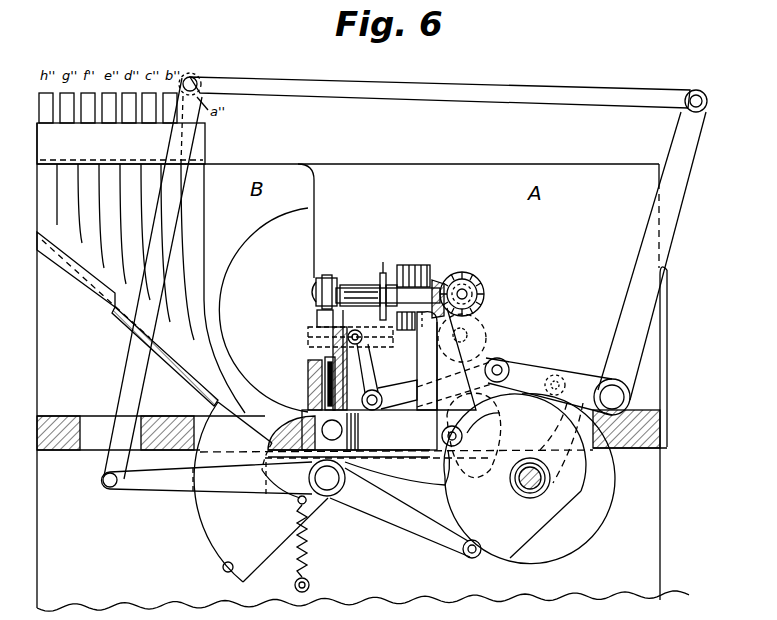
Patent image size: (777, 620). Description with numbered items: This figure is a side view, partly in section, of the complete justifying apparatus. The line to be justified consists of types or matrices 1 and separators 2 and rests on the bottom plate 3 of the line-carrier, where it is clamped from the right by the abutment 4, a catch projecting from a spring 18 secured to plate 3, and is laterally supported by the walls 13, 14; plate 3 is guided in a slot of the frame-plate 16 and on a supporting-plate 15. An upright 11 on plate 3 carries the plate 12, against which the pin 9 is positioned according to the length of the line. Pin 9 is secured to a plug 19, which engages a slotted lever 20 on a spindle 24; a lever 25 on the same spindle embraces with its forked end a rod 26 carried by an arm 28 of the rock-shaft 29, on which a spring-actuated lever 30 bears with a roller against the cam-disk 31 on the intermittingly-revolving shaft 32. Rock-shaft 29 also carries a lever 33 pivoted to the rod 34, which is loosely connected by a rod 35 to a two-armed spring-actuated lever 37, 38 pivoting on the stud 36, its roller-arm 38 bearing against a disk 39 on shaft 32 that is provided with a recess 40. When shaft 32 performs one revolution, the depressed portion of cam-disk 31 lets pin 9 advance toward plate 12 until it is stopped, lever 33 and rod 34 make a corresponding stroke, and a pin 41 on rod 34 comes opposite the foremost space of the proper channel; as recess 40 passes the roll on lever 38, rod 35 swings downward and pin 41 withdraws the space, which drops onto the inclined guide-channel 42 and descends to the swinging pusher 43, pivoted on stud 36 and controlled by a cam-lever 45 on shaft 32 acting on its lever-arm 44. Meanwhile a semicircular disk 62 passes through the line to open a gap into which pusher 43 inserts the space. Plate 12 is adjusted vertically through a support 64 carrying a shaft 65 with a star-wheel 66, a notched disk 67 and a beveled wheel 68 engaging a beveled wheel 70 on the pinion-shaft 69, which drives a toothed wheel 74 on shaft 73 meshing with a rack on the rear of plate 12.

The types or matrices 1 is at (350, 337).
The separators 2 is at (325, 318).
The bottom plate 3 is at (352, 383).
The right-hand abutment 4 is at (326, 377).
The pin 9 is at (393, 338).
The upright 11 is at (428, 361).
The plate 12 is at (418, 265).
The wall 13 is at (308, 378).
The channel-wall 14 is at (344, 354).
The supporting-plate 15 is at (382, 458).
The frame-plate 16 is at (650, 413).
The spring 18 is at (343, 432).
The plug 19 is at (357, 334).
The slotted lever 20 is at (366, 368).
The spindle 24 is at (376, 390).
The lever 25 is at (385, 398).
The rod 26 is at (500, 366).
The arm 28 is at (549, 386).
The rock-shaft 29 is at (612, 397).
The spring-actuated lever 30 is at (566, 385).
The cam-disk 31 is at (515, 476).
The intermittingly-revolving shaft 32 is at (524, 492).
The lever 33 is at (652, 256).
The rod 34 is at (448, 94).
The rod 35 is at (152, 282).
The stud 36 is at (327, 478).
The lever arm 37 is at (207, 478).
The roller-arm 38 is at (405, 513).
The disk 39 is at (530, 479).
The recess 40 is at (471, 435).
The pin 41 is at (193, 77).
The inclined guide-channel 42 is at (127, 319).
The swinging pusher 43 is at (261, 492).
The lever-arm 44 is at (397, 467).
The cam-lever 45 is at (565, 443).
The semicircular disk 62 is at (263, 310).
The support 64 is at (454, 359).
The shaft 65 is at (358, 288).
The star-wheel 66 is at (326, 276).
The notched disk 67 is at (383, 262).
The beveled wheel 68 is at (441, 280).
The pinion-shaft 69 is at (469, 291).
The beveled wheel 70 is at (482, 292).
The shaft 73 is at (467, 333).
The toothed wheel 74 is at (484, 340).